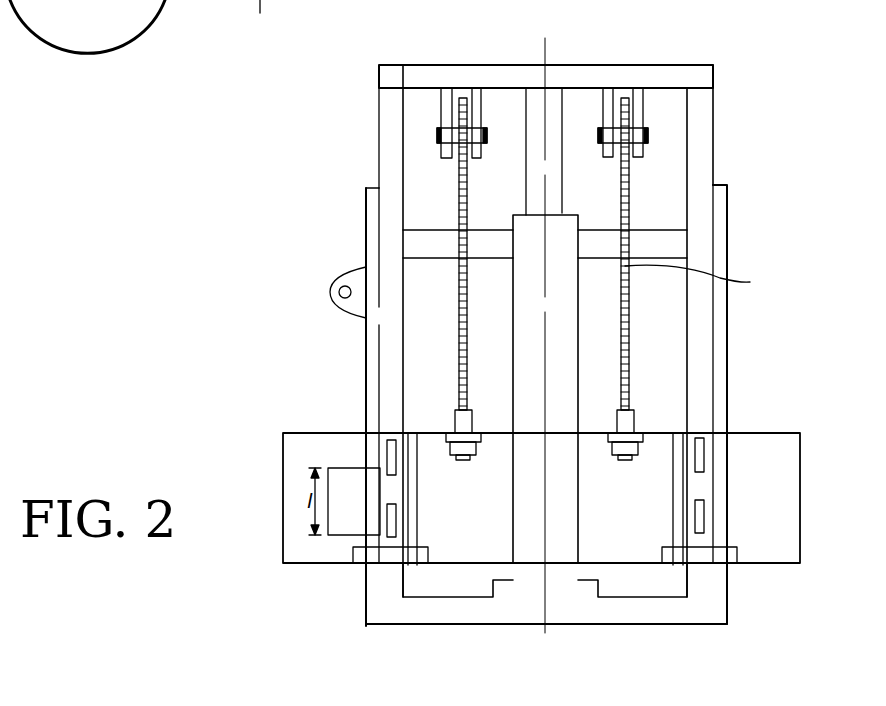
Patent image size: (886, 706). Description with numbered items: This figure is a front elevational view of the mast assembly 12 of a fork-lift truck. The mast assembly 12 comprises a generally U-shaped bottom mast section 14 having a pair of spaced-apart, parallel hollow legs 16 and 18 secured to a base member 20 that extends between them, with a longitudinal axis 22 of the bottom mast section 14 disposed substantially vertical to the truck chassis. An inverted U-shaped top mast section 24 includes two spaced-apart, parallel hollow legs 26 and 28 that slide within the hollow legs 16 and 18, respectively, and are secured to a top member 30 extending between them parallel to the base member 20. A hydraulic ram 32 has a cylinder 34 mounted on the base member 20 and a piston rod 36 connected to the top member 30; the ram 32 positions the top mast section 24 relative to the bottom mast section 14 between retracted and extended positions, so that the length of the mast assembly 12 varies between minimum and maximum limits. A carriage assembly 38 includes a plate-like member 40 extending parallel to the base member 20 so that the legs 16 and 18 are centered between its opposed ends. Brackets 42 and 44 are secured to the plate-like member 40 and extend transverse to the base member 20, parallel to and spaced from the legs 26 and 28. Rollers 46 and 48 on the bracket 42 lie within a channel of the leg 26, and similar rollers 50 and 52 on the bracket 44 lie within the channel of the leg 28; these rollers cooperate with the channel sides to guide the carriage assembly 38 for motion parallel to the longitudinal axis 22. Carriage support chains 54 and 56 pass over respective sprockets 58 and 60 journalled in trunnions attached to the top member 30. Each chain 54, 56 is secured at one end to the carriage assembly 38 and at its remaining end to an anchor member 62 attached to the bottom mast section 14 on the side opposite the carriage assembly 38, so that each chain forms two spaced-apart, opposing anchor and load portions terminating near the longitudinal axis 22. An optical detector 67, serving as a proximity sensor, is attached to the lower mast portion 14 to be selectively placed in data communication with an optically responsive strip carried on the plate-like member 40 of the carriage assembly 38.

The mast assembly 12 is at (342, 208).
The bottom mast section 14 is at (705, 627).
The hollow leg 16 is at (386, 397).
The hollow leg 18 is at (700, 318).
The base member 20 is at (402, 609).
The longitudinal axis 22 is at (548, 48).
The top mast section 24 is at (378, 66).
The leg 26 is at (384, 153).
The leg 28 is at (698, 156).
The top member 30 is at (384, 79).
The hydraulic ram 32 is at (502, 347).
The cylinder 34 is at (560, 343).
The piston rod 36 is at (527, 150).
The carriage assembly 38 is at (855, 505).
The plate-like member 40 is at (785, 462).
The bracket 42 is at (415, 430).
The bracket 44 is at (675, 428).
The roller 46 is at (385, 465).
The roller 48 is at (386, 520).
The roller 50 is at (727, 428).
The roller 52 is at (702, 523).
The carriage support chain 54 is at (457, 330).
The carriage support chain 56 is at (705, 279).
The sprocket 58 is at (458, 113).
The sprocket 60 is at (630, 120).
The anchor member 62 is at (660, 242).
The optical detector 67 is at (338, 300).